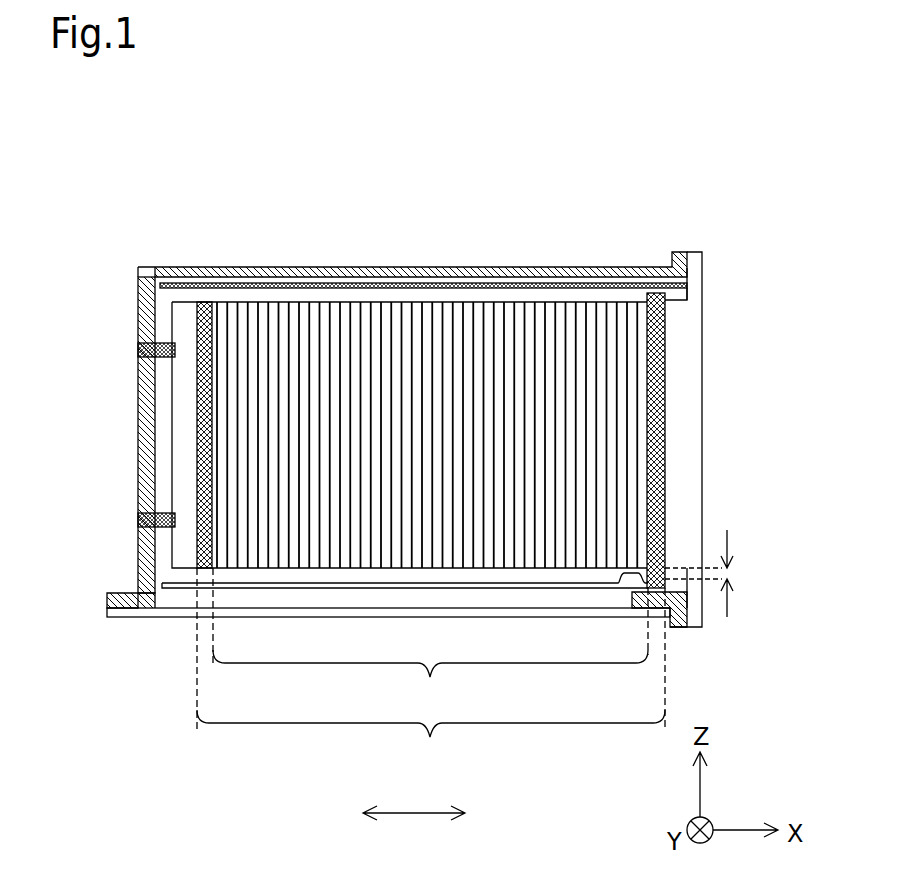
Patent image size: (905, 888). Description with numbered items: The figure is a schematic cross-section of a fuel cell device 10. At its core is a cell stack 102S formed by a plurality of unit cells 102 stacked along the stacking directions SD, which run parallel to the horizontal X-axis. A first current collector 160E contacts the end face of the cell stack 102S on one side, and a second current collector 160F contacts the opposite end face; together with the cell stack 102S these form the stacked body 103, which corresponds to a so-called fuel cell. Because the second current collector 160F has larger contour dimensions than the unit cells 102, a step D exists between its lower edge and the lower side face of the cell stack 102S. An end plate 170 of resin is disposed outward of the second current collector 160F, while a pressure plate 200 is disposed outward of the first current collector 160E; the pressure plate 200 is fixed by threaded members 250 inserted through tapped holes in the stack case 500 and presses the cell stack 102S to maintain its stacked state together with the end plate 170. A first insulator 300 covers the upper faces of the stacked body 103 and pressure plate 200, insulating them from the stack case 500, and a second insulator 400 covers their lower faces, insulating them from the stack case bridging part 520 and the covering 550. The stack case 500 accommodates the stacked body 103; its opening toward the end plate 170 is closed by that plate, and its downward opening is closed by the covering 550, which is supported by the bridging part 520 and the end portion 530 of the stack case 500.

The fuel cell device 10 is at (85, 223).
The unit cell 102 is at (486, 302).
The cell stack 102S is at (430, 684).
The stacked body 103 is at (431, 742).
The first current collector 160E is at (205, 302).
The second current collector 160F is at (657, 293).
The end plate 170 is at (704, 445).
The pressure plate 200 is at (172, 433).
The threaded member 250 is at (138, 350).
The first insulator 300 is at (266, 283).
The second insulator 400 is at (180, 588).
The stack case 500 is at (372, 268).
The stack case bridging part 520 is at (682, 628).
The end portion 530 is at (115, 612).
The covering 550 is at (127, 617).
The step D is at (742, 573).
The stacking directions SD is at (414, 799).